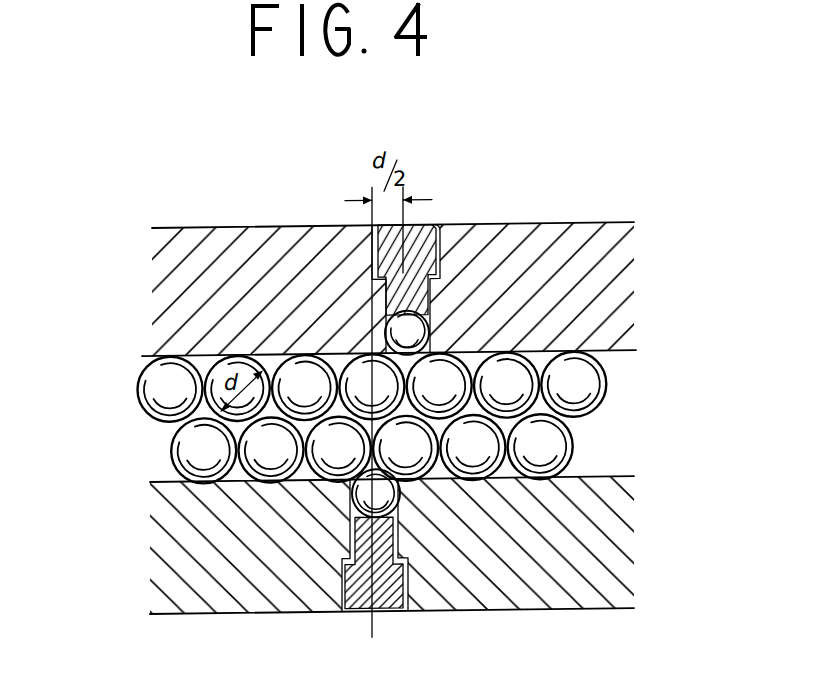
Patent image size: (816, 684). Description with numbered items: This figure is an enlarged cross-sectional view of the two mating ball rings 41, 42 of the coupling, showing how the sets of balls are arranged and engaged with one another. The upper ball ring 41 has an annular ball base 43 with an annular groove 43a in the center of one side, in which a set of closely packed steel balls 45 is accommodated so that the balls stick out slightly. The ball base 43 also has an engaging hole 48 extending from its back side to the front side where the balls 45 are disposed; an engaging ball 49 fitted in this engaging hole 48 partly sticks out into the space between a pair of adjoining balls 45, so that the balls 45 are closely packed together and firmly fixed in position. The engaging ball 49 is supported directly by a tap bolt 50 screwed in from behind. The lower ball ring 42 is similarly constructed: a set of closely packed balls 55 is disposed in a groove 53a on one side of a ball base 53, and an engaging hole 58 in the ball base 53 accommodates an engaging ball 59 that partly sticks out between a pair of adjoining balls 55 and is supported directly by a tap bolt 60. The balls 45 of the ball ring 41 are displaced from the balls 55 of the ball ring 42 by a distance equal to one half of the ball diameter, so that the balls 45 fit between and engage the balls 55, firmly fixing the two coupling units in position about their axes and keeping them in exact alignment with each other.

The ball ring 41 is at (375, 264).
The ball ring 42 is at (374, 556).
The annular ball base 43 is at (580, 237).
The annular groove 43a is at (148, 378).
The balls 45 is at (231, 366).
The engaging hole 48 is at (422, 228).
The engaging ball 49 is at (392, 326).
The tap bolt 50 is at (373, 231).
The ball base 53 is at (597, 603).
The groove 53a is at (161, 484).
The balls 55 is at (553, 440).
The engaging hole 58 is at (394, 612).
The engaging ball 59 is at (356, 500).
The tap bolt 60 is at (360, 612).